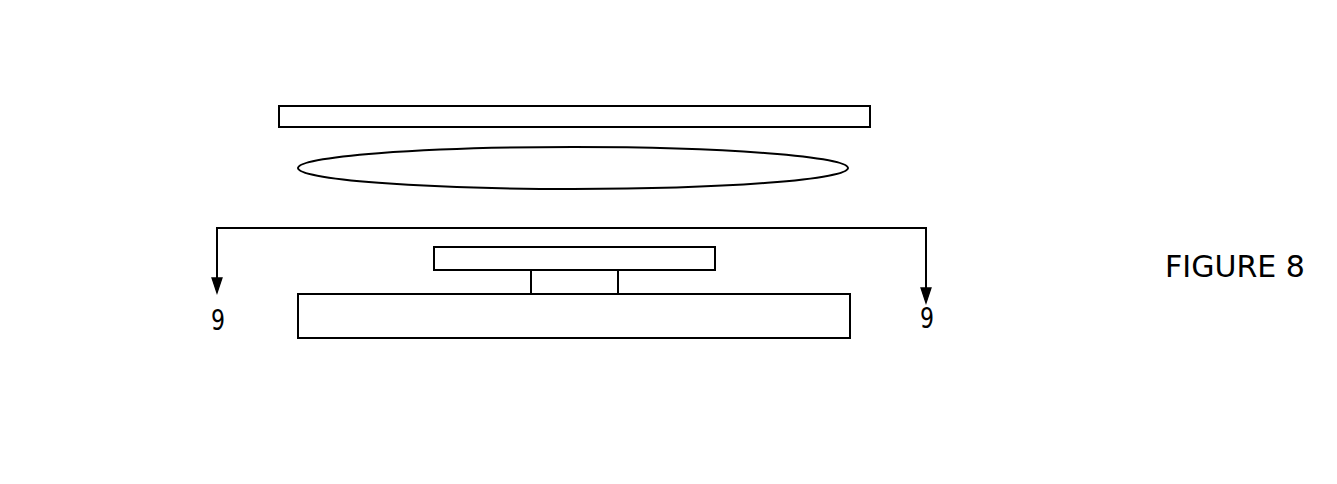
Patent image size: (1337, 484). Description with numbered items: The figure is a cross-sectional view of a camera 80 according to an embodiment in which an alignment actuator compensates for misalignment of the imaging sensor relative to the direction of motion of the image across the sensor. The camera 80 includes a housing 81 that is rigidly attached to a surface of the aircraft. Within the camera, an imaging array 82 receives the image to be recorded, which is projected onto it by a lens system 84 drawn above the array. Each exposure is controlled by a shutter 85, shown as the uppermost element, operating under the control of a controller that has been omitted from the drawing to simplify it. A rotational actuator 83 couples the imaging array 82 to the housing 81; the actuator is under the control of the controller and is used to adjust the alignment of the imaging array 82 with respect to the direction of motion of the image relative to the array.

The camera 80 is at (1050, 121).
The housing 81 is at (839, 327).
The imaging array 82 is at (703, 258).
The rotational actuator 83 is at (562, 283).
The lens system 84 is at (825, 172).
The shutter 85 is at (847, 117).